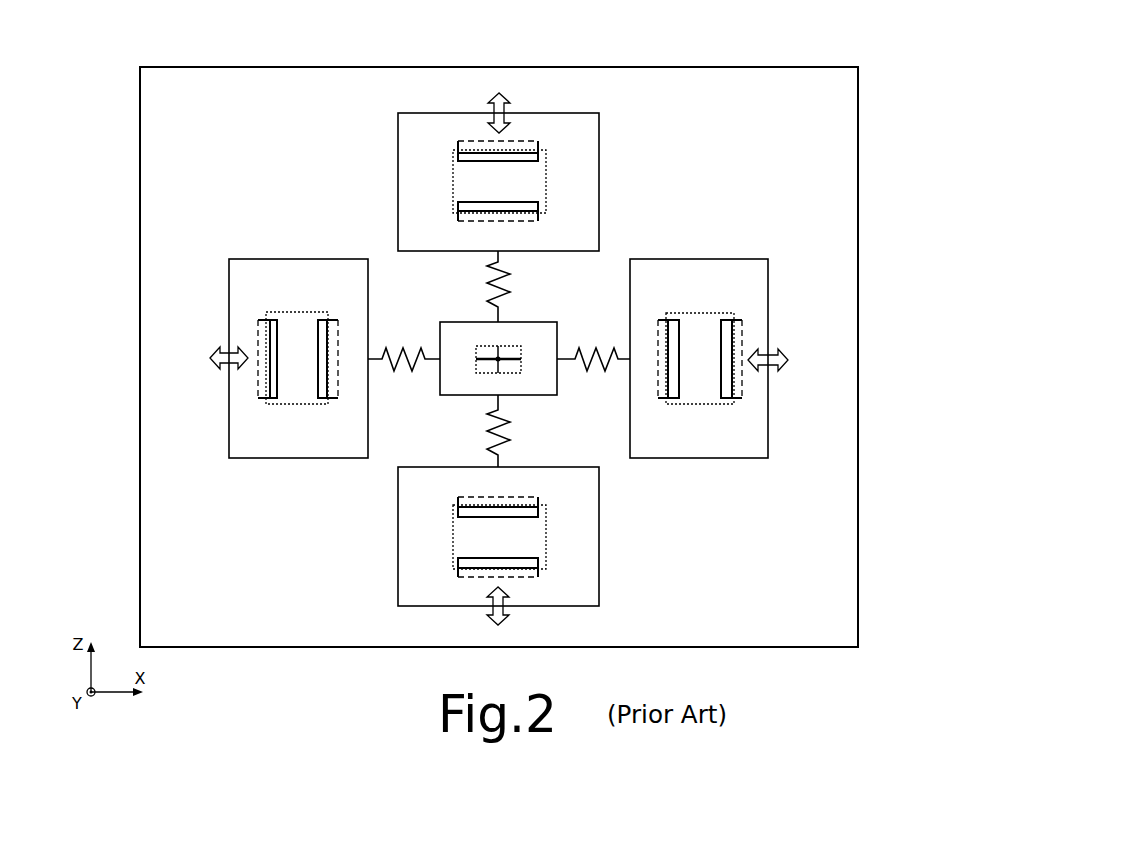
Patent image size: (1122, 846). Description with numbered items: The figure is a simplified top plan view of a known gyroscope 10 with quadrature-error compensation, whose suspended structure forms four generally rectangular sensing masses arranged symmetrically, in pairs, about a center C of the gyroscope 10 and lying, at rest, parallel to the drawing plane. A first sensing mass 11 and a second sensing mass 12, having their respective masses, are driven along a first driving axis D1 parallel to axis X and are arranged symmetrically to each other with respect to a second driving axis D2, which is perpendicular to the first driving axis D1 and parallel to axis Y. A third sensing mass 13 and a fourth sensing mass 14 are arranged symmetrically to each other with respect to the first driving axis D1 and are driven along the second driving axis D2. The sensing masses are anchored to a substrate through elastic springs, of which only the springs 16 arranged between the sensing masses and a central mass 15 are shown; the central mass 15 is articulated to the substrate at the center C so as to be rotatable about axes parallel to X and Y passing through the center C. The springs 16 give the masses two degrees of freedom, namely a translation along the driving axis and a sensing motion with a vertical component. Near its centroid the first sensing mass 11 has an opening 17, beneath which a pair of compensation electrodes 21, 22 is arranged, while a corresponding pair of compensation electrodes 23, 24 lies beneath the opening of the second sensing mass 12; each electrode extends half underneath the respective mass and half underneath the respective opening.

The gyroscope 10 is at (526, 333).
The first sensing mass 11 is at (335, 458).
The second sensing mass 12 is at (656, 450).
The third sensing mass 13 is at (590, 184).
The fourth sensing mass 14 is at (590, 523).
The central mass 15 is at (545, 350).
The springs 16 is at (402, 345).
The opening 17 is at (292, 322).
The compensation electrode 21 is at (272, 322).
The compensation electrode 22 is at (323, 323).
The compensation electrode 23 is at (672, 376).
The compensation electrode 24 is at (724, 393).
The center C is at (492, 352).
The first driving axis D1 is at (492, 345).
The second driving axis D2 is at (496, 358).